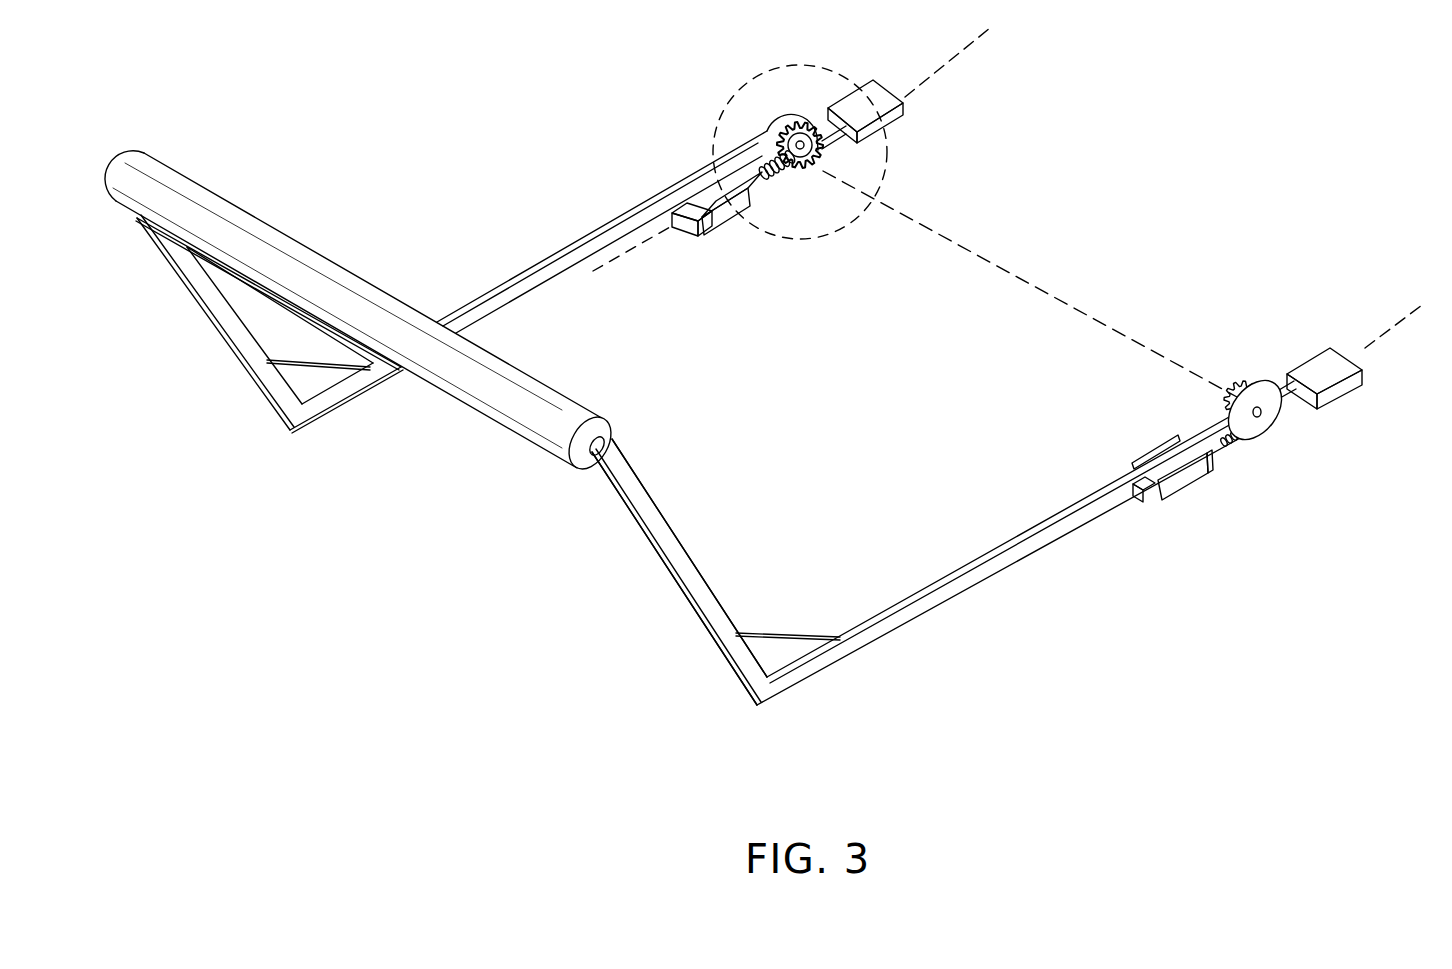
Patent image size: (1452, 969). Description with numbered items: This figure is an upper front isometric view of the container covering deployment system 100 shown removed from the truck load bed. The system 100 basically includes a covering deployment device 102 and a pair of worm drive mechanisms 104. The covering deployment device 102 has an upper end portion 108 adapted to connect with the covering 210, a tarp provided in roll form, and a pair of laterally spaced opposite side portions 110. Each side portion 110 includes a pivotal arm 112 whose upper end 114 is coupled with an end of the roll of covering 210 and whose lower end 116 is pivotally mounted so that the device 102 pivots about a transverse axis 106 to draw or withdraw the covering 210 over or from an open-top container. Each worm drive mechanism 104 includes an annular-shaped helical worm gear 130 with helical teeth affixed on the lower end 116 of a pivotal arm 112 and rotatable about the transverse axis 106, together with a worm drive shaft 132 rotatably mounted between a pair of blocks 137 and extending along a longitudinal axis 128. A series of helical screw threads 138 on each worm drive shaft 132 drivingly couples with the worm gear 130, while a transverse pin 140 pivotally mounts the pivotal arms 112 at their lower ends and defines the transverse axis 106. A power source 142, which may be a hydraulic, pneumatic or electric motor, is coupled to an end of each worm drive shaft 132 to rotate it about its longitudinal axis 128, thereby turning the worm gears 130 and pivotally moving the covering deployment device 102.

The container covering deployment system 100 is at (381, 100).
The covering deployment device 102 is at (478, 225).
The worm drive mechanism 104 is at (784, 200).
The transverse axis 106 is at (988, 250).
The upper end portion 108 is at (625, 435).
The opposite side portion 110 is at (372, 404).
The pivotal arm 112 is at (616, 203).
The upper end 114 is at (622, 470).
The lower end 116 is at (780, 108).
The longitudinal axis 128 is at (970, 80).
The annular-shaped helical worm gear 130 is at (762, 120).
The worm drive shaft 132 is at (830, 152).
The block 137 is at (897, 117).
The helical screw threads 138 is at (802, 172).
The transverse pin 140 is at (816, 137).
The power source 142 is at (688, 236).
The covering 210 is at (473, 405).